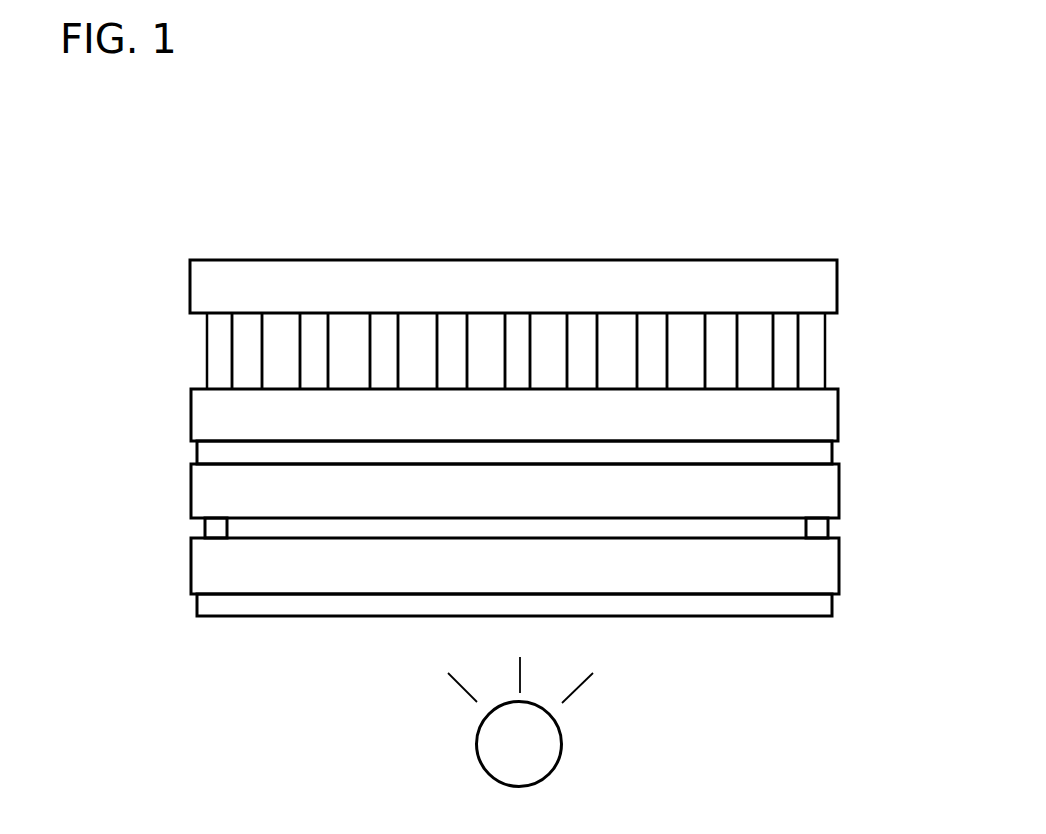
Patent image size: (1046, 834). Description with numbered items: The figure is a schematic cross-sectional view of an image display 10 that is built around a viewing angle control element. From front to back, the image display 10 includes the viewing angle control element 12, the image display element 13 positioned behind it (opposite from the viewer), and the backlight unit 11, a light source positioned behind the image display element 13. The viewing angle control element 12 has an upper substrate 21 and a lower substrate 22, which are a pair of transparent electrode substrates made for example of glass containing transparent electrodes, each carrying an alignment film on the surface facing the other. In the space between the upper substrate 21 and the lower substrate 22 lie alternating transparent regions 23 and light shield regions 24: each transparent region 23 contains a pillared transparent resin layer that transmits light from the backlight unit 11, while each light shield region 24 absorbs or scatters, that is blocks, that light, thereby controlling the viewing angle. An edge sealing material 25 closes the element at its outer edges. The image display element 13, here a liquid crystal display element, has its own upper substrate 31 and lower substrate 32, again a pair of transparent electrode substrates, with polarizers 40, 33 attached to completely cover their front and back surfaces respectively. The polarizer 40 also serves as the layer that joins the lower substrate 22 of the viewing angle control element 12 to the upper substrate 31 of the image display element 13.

The image display 10 is at (398, 153).
The backlight unit 11 is at (550, 755).
The viewing angle control element 12 is at (185, 260).
The image display element 13 is at (185, 445).
The upper substrate 21 is at (815, 262).
The lower substrate 22 is at (827, 415).
The transparent region 23 is at (247, 324).
The light shield region 24 is at (281, 324).
The edge sealing material 25 is at (220, 324).
The upper substrate 31 is at (828, 497).
The lower substrate 32 is at (828, 567).
The polarizer 33 is at (820, 612).
The polarizer 40 is at (818, 455).